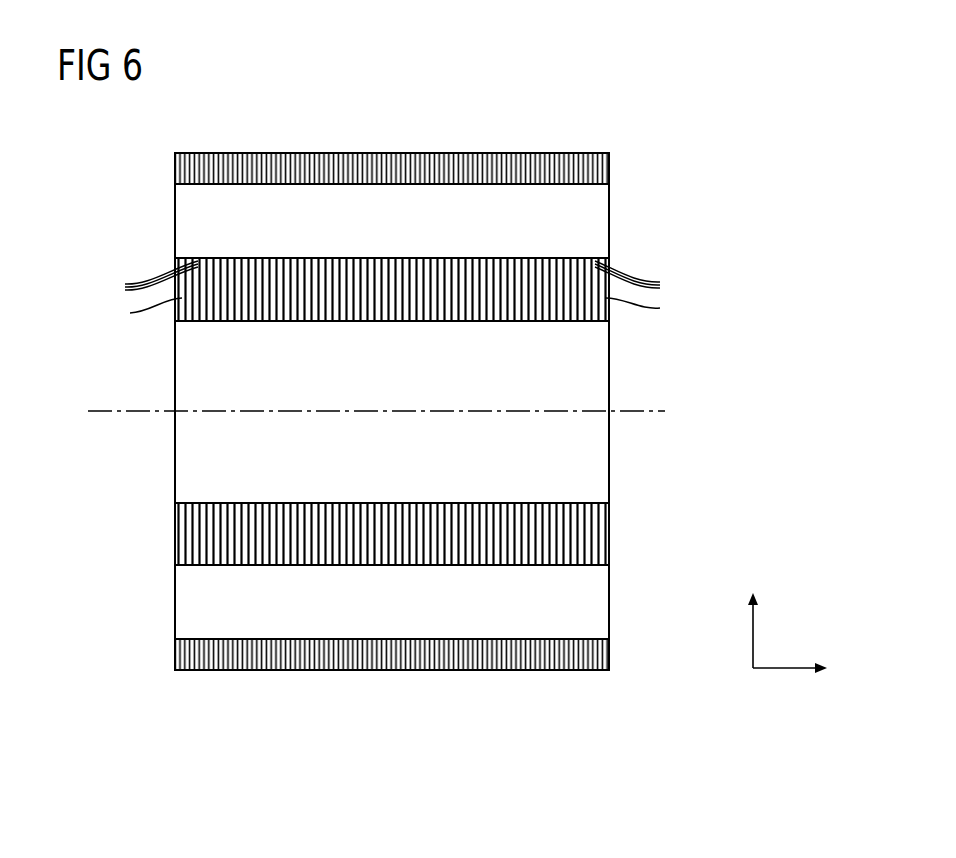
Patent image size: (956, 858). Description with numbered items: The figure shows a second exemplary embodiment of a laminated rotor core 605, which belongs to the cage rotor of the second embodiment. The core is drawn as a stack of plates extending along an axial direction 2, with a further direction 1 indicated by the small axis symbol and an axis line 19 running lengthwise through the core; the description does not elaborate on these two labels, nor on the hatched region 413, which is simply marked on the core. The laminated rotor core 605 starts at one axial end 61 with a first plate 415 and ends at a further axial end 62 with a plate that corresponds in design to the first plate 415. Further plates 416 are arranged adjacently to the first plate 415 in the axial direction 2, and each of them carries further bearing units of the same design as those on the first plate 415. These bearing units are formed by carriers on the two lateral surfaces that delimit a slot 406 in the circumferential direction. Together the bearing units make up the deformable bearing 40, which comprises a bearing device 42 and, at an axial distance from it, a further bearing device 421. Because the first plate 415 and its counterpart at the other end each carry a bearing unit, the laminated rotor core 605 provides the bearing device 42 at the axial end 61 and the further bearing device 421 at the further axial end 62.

The first direction (axial) 1 is at (753, 643).
The axial direction 2 is at (778, 670).
The axis of rotation 19 is at (102, 411).
The deformable bearing 40 is at (157, 251).
The bearing device 42 is at (193, 253).
The axial end 61 is at (176, 148).
The further axial end 62 is at (607, 148).
The slot 406 is at (400, 180).
The winding layer 413 is at (320, 257).
The first plate 415 is at (394, 311).
The further plates 416 is at (394, 281).
The further bearing device 421 is at (590, 250).
The laminated rotor core 605 is at (482, 127).